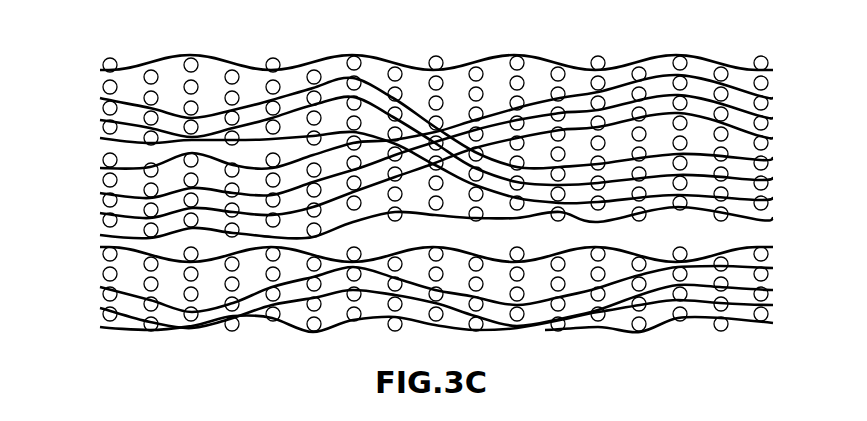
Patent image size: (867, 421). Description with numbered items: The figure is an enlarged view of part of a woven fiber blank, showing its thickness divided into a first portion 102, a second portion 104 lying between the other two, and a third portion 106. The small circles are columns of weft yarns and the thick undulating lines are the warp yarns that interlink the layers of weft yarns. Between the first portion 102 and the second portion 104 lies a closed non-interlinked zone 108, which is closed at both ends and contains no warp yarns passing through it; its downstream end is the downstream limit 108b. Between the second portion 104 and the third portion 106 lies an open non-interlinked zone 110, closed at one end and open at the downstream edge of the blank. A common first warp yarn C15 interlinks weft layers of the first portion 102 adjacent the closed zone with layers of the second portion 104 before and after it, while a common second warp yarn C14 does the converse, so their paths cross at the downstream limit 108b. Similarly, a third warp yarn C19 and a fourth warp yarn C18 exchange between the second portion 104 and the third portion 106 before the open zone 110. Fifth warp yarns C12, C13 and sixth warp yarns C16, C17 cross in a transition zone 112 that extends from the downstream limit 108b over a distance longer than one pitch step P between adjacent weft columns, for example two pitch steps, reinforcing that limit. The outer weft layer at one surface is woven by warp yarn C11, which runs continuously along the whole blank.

The first portion 102 is at (100, 60).
The second portion 104 is at (100, 153).
The third portion 106 is at (100, 250).
The closed non-interlinked zone 108 is at (122, 147).
The downstream limit of the closed non-interlinked zone 108b is at (340, 143).
The open non-interlinked zone 110 is at (118, 242).
The transition zone 112 is at (487, 217).
The pitch step P is at (474, 42).
The warp yarn c11 C11 is at (126, 70).
The fifth warp yarn C12 is at (170, 113).
The fifth warp yarn C13 is at (212, 117).
The second warp yarn C14 is at (286, 165).
The first warp yarn C15 is at (253, 120).
The sixth warp yarn C16 is at (620, 103).
The sixth warp yarn C17 is at (665, 117).
The fourth warp yarn C18 is at (660, 265).
The third warp yarn C19 is at (571, 100).